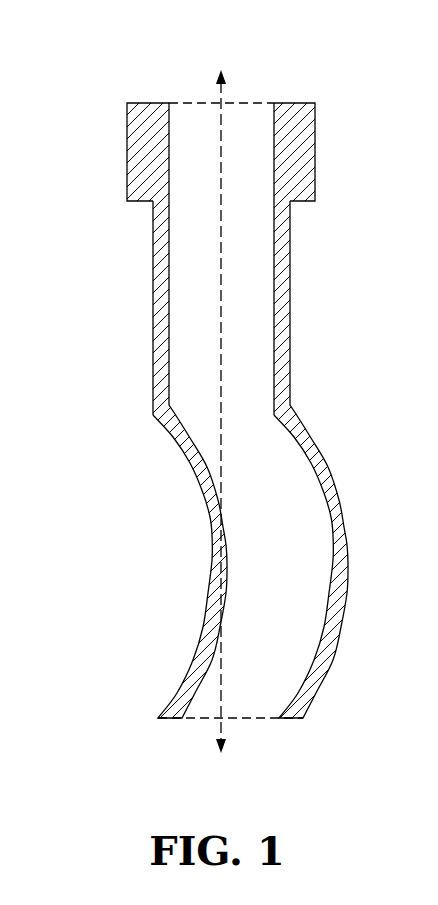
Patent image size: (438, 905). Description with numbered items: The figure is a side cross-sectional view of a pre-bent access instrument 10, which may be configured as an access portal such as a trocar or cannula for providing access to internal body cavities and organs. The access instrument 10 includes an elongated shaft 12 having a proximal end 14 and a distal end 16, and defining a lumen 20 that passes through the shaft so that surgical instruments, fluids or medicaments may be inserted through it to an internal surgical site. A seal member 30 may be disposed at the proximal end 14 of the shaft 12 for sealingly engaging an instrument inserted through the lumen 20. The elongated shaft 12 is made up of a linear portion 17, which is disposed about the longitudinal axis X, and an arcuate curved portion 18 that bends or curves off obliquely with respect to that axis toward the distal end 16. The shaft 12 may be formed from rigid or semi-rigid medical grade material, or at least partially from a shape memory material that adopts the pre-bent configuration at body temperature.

The access instrument 10 is at (120, 78).
The elongated shaft 12 is at (307, 330).
The proximal end 14 is at (315, 152).
The distal end 16 is at (318, 696).
The linear portion 17 is at (152, 300).
The curved portion 18 is at (210, 565).
The lumen 20 is at (252, 107).
The seal member 30 is at (136, 137).